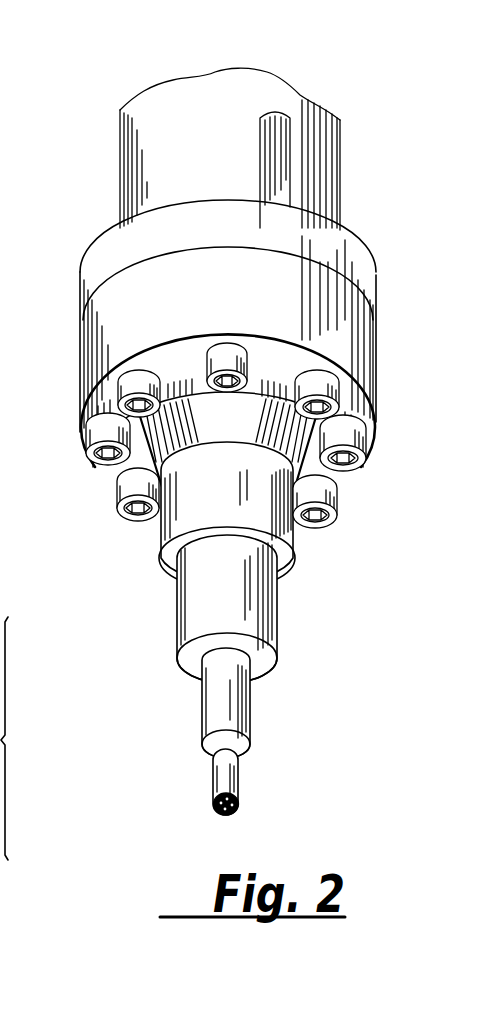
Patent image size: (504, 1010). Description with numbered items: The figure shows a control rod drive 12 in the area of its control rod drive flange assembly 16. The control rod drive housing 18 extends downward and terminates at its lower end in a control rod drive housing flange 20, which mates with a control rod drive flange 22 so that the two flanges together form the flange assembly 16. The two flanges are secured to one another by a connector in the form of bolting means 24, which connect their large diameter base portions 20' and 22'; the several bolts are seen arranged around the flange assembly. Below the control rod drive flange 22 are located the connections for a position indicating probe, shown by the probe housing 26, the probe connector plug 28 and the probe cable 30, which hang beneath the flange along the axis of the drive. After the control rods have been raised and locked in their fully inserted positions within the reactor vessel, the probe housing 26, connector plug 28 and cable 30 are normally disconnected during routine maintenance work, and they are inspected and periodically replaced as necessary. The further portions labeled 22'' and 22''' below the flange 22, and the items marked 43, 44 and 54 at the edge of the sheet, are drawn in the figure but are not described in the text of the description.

The control rod drive 12 is at (312, 98).
The control rod drive flange assembly 16 is at (229, 500).
The control rod drive housing 18 is at (120, 138).
The control rod drive housing flange 20 is at (206, 229).
The large diameter base portion 20' is at (202, 282).
The control rod drive flange 22 is at (193, 334).
The large diameter base portion 22' is at (205, 400).
The conical hub 22'' is at (172, 443).
The cylindrical boss 22''' is at (194, 515).
The bolting means 24 is at (300, 370).
The probe housing 26 is at (193, 605).
The probe connector plug 28 is at (203, 707).
The probe cable 30 is at (213, 777).
The support member 43 is at (2, 542).
The mounting bracket 44 is at (23, 738).
The base member 54 is at (8, 906).